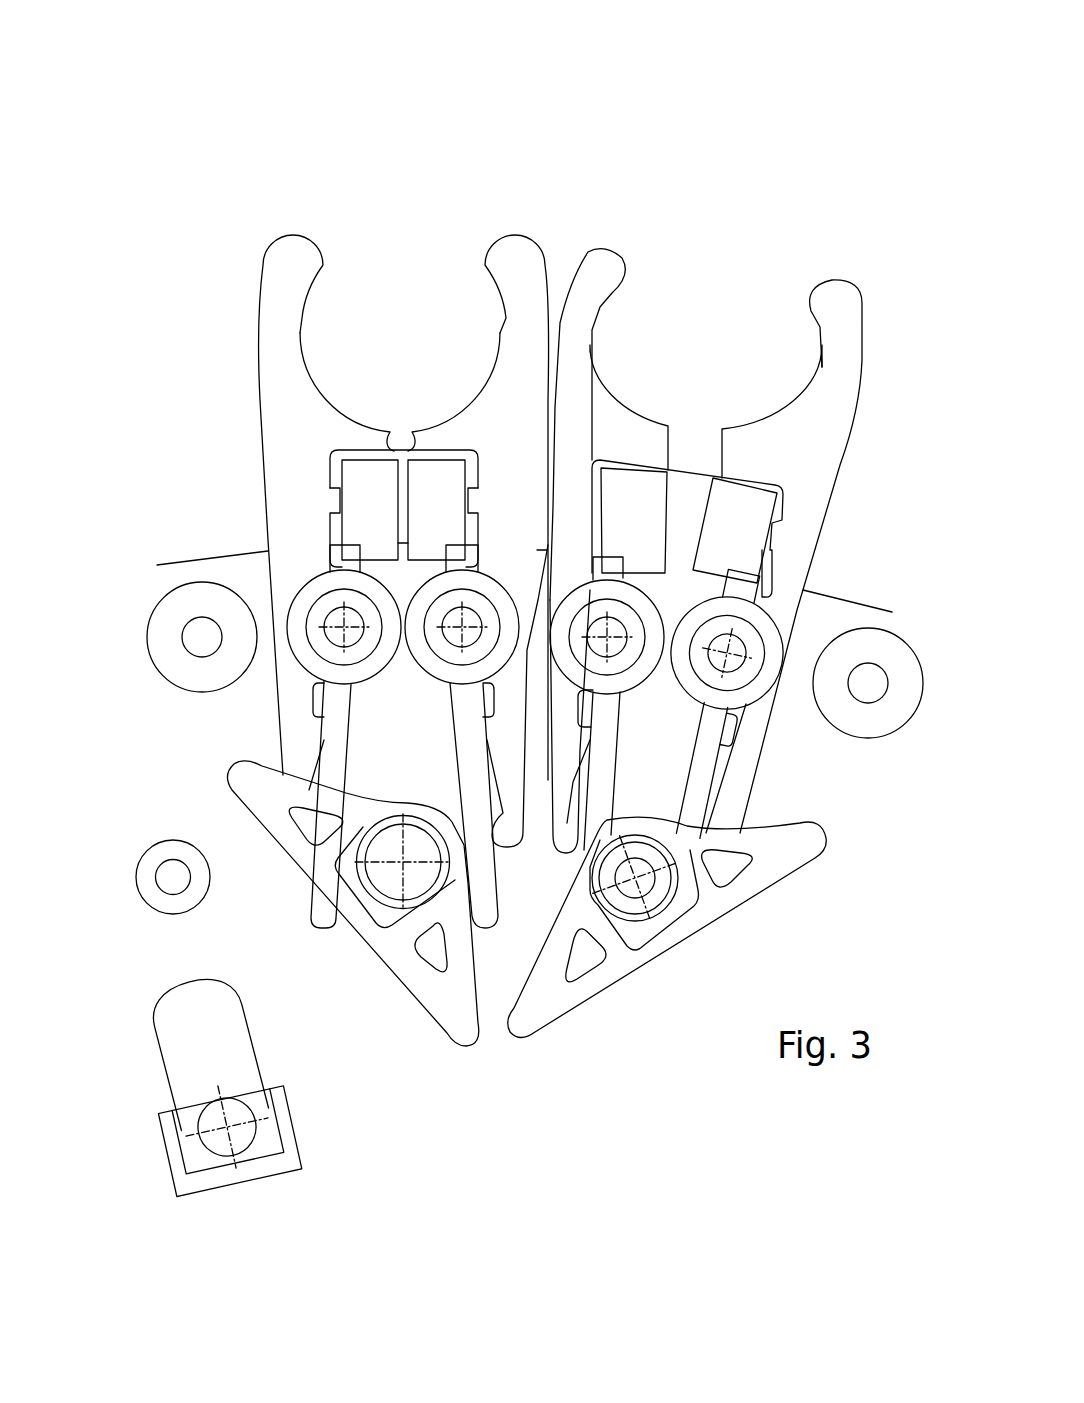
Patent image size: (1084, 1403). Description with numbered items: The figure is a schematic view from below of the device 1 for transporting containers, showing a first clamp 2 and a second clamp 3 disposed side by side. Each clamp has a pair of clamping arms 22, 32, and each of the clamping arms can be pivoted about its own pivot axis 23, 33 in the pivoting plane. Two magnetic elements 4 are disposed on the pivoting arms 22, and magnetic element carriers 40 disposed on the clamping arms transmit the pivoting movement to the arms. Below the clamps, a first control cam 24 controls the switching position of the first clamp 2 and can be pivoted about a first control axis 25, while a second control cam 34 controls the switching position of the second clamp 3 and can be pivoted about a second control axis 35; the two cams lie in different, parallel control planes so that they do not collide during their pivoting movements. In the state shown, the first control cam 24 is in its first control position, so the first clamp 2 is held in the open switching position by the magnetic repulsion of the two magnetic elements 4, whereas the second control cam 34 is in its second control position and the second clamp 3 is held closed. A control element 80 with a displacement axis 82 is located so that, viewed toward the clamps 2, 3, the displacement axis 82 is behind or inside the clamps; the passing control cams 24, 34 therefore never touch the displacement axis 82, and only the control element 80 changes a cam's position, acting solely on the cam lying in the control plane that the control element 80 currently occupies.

The device for transporting containers 1 is at (274, 130).
The first clamp 2 is at (764, 262).
The second clamp 3 is at (381, 241).
The magnetic elements 4 is at (432, 483).
The clamping arms of the first clamp 22 is at (837, 348).
The pivot axes of the first clamp 23 is at (607, 637).
The first control cam 24 is at (555, 1003).
The first control axis 25 is at (635, 878).
The clamping arms of the second clamp 32 is at (507, 273).
The pivot axes of the second clamp 33 is at (344, 627).
The second control cam 34 is at (392, 947).
The second control axis 35 is at (402, 863).
The magnetic element carriers 40 is at (470, 780).
The control element 80 is at (217, 997).
The displacement axis 82 is at (240, 1110).